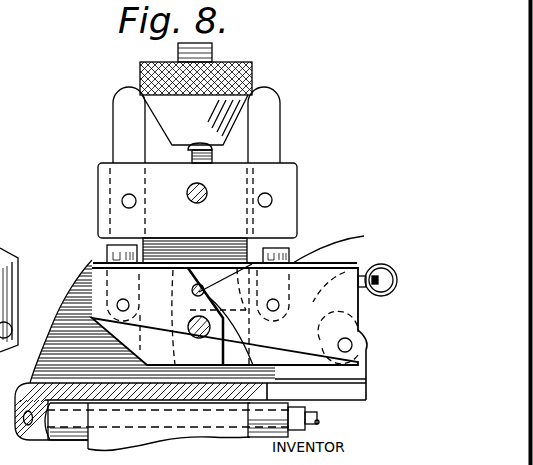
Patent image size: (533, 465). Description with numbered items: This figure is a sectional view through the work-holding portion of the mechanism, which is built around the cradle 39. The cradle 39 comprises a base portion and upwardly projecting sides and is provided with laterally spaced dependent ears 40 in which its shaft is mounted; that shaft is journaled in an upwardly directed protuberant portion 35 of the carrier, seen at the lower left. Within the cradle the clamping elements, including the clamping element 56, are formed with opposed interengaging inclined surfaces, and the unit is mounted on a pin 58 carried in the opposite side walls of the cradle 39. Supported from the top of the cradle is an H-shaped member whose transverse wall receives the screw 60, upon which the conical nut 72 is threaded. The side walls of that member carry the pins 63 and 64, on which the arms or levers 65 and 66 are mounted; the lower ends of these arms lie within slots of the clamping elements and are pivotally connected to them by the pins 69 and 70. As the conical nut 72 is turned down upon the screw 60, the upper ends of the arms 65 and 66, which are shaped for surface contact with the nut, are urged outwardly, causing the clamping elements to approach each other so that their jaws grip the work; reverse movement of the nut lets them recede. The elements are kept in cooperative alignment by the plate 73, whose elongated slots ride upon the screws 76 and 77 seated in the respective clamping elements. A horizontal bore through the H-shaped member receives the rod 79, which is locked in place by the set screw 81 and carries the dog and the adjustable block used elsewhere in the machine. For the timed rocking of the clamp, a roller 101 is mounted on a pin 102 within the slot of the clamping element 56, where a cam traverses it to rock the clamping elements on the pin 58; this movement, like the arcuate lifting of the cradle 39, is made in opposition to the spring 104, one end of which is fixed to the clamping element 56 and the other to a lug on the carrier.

The screw 60 is at (197, 50).
The conical nut 72 is at (248, 72).
The arm or lever 65 is at (125, 132).
The arm or lever 66 is at (260, 138).
The set screw 81 is at (190, 143).
The pin 63 is at (122, 200).
The pin 64 is at (272, 200).
The rod 79 is at (190, 199).
The screw 76 is at (107, 248).
The screw 77 is at (266, 249).
The plate 73 is at (303, 263).
The cradle 39 is at (78, 275).
The pin 70 is at (280, 305).
The pin 58 is at (195, 337).
The pin 69 is at (118, 302).
The clamping element 56 is at (337, 275).
The spring 104 is at (398, 270).
The roller 101 is at (366, 347).
The pin 102 is at (345, 350).
The dependent ears 40 is at (250, 415).
The protuberant portion 35 is at (90, 443).